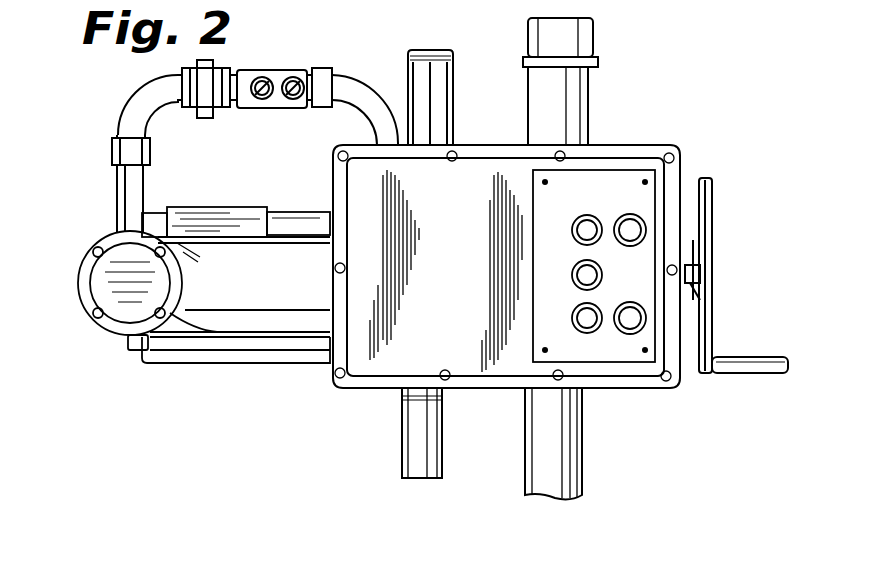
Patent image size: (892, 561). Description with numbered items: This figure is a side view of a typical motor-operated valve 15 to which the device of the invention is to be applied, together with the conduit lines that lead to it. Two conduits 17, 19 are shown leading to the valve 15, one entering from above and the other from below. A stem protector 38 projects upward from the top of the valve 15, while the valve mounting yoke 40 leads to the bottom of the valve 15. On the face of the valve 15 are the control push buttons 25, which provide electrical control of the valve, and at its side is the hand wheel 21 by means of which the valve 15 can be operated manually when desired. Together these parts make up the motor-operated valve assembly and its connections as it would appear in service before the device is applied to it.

The motor-operated valve 15 is at (393, 343).
The conduit 17 is at (440, 108).
The conduit 19 is at (410, 450).
The hand wheel 21 is at (705, 312).
The control push buttons 25 is at (600, 272).
The stem protector 38 is at (585, 93).
The valve mounting yoke 40 is at (575, 471).